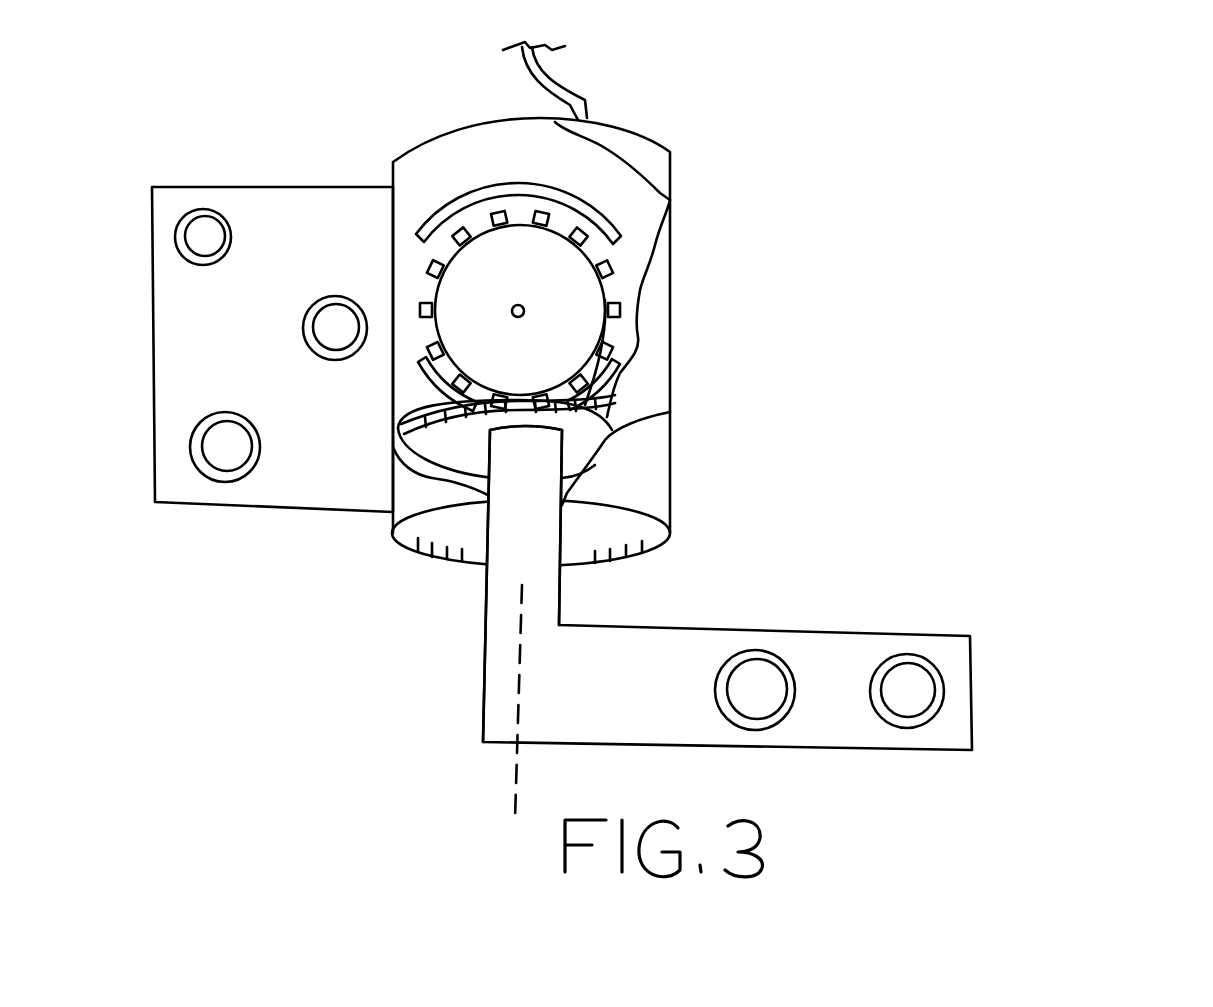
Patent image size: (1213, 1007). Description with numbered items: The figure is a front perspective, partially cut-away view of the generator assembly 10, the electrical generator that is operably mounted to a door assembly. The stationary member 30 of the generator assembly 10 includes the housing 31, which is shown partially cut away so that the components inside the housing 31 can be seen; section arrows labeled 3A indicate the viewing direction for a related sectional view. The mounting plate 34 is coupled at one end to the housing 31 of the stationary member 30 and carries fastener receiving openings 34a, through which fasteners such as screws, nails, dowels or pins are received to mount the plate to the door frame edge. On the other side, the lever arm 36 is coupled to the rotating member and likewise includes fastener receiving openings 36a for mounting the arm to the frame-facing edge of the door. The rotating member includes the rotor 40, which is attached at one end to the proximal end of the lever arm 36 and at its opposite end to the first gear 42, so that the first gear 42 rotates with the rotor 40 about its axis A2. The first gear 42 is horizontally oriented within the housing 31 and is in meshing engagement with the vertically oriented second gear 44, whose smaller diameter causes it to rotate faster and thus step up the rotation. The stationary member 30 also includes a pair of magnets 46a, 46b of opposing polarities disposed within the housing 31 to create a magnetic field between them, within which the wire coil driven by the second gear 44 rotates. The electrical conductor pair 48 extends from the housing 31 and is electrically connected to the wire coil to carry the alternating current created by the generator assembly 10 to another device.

The generator assembly 10 is at (912, 148).
The stationary member 30 is at (463, 152).
The housing 31 is at (656, 355).
The mounting plate 34 is at (267, 197).
The fastener receiving openings 34a is at (197, 222).
The lever arm 36 is at (865, 650).
The fastener receiving openings 36a is at (735, 708).
The rotor 40 is at (548, 550).
The first gear 42 is at (585, 435).
The second gear 44 is at (600, 300).
The magnet 46a is at (597, 210).
The magnet 46b is at (588, 395).
The electrical conductor pair 48 is at (580, 102).
The rotation axis A2 is at (515, 675).
The section line 3A is at (1212, 43).